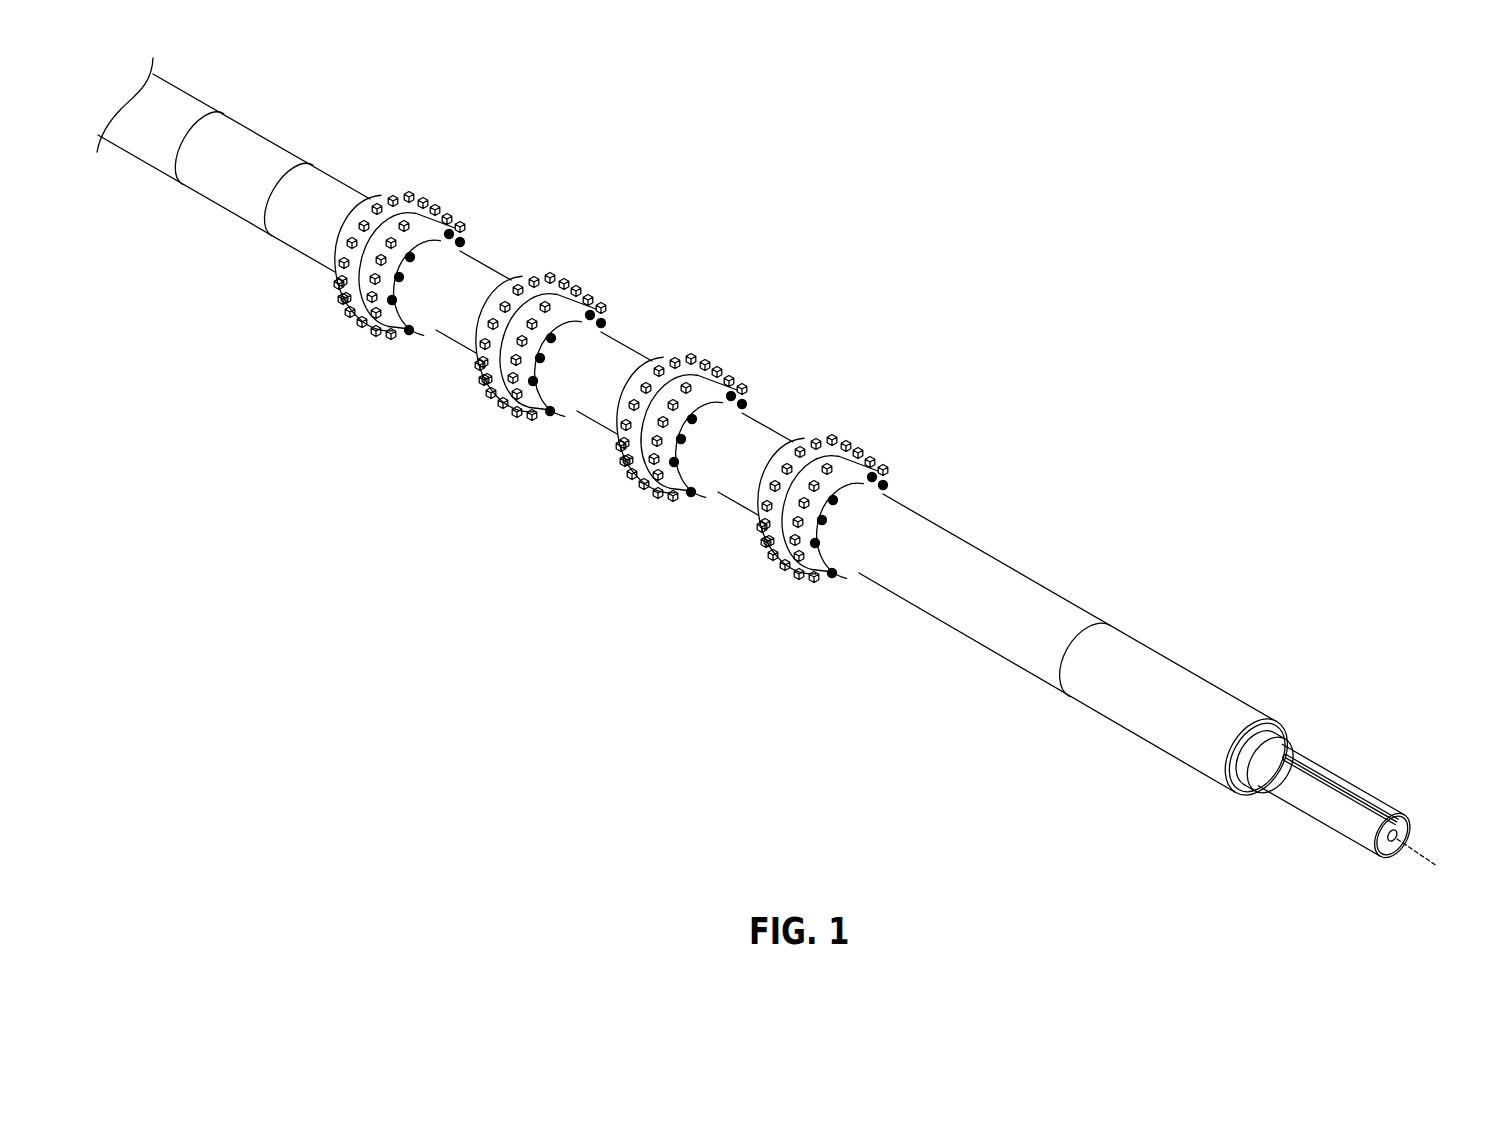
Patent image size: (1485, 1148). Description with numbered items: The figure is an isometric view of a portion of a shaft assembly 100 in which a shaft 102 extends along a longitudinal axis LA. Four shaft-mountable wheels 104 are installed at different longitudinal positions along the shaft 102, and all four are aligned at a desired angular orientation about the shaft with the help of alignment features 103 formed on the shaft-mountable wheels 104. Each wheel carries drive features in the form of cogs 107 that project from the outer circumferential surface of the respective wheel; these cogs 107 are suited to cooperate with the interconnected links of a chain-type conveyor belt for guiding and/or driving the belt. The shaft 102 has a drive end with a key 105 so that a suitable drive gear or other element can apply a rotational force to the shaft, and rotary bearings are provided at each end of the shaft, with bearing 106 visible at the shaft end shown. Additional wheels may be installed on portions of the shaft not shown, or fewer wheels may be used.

The shaft assembly 100 is at (906, 197).
The shaft 102 is at (975, 557).
The alignment features 103 is at (611, 360).
The shaft-mountable wheels 104 is at (641, 362).
The key 105 is at (1347, 780).
The bearing 106 is at (1170, 672).
The cogs 107 is at (668, 377).